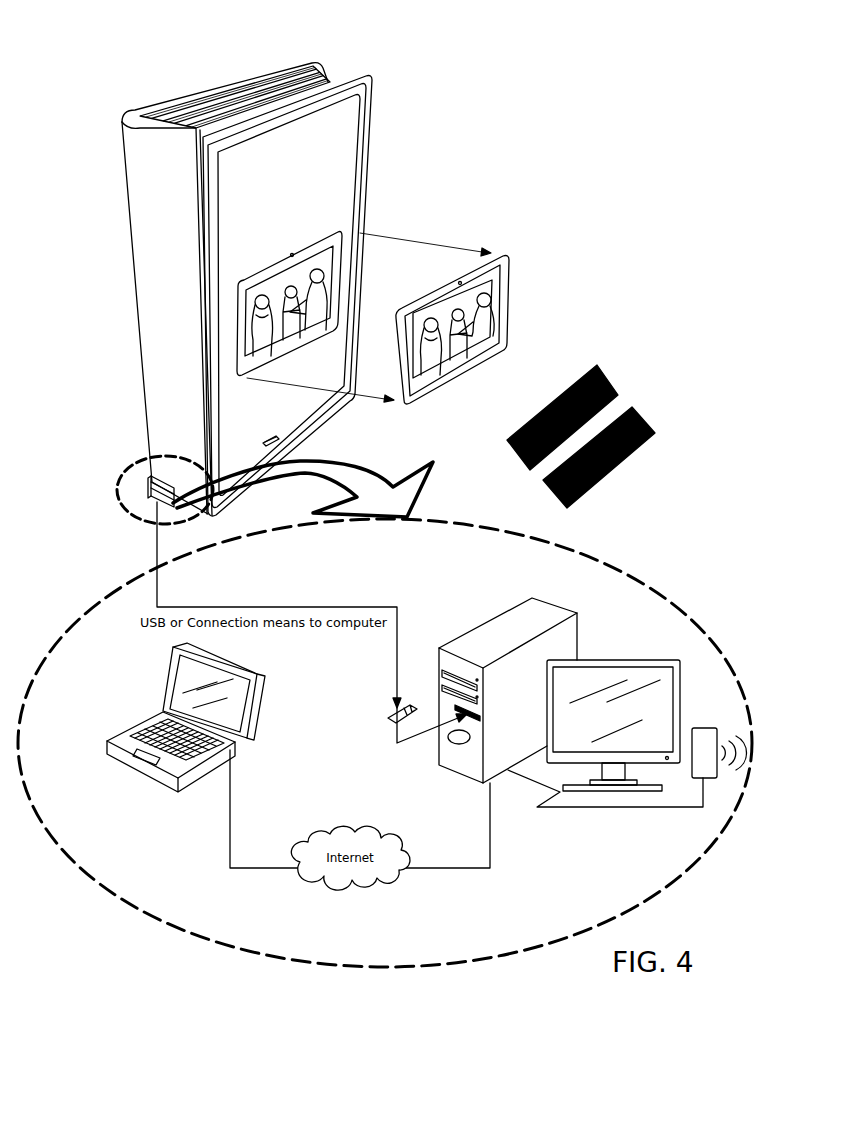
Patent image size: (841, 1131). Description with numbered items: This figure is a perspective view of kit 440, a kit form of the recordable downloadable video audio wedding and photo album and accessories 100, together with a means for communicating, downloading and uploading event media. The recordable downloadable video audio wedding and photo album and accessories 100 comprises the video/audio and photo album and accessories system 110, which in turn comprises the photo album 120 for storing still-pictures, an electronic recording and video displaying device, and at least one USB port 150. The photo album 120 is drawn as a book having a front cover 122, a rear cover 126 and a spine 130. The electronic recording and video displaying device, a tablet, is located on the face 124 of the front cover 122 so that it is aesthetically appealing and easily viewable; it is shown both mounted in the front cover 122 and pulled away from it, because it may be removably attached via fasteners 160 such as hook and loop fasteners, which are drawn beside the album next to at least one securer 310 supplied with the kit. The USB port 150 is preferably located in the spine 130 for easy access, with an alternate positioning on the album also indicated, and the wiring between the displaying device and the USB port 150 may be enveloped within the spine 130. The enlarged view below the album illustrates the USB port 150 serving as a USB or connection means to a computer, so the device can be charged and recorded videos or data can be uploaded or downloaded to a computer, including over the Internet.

The recordable downloadable video audio wedding and photo album and accessories 100 is at (589, 158).
The video/audio and photo album and accessories system 110 is at (601, 197).
The photo album 120 is at (374, 134).
The front cover 122 is at (305, 166).
The face 124 is at (497, 243).
The rear cover 126 is at (279, 66).
The spine 130 is at (177, 310).
The USB port 150 is at (146, 482).
The fasteners 160 is at (647, 410).
The securer 310 is at (612, 368).
The kit 440 is at (611, 254).